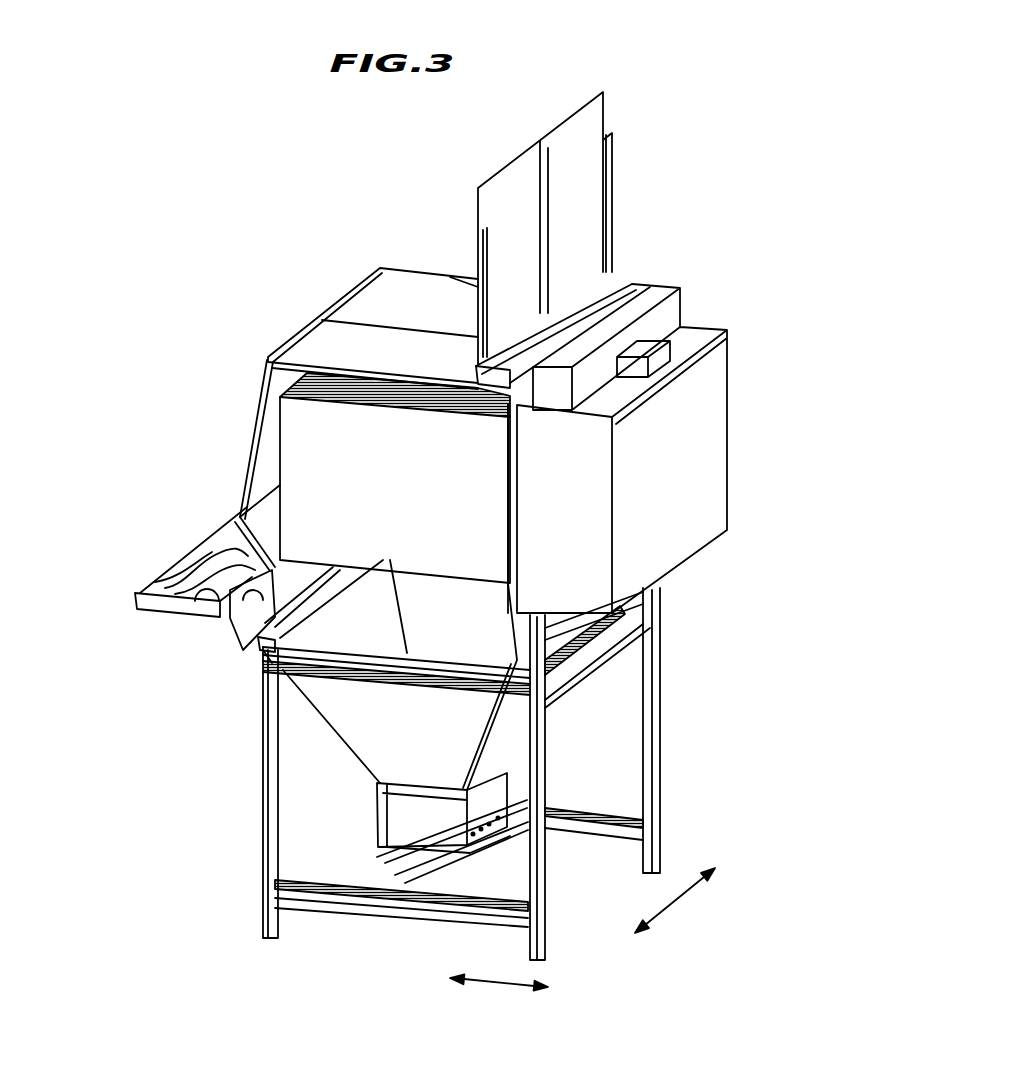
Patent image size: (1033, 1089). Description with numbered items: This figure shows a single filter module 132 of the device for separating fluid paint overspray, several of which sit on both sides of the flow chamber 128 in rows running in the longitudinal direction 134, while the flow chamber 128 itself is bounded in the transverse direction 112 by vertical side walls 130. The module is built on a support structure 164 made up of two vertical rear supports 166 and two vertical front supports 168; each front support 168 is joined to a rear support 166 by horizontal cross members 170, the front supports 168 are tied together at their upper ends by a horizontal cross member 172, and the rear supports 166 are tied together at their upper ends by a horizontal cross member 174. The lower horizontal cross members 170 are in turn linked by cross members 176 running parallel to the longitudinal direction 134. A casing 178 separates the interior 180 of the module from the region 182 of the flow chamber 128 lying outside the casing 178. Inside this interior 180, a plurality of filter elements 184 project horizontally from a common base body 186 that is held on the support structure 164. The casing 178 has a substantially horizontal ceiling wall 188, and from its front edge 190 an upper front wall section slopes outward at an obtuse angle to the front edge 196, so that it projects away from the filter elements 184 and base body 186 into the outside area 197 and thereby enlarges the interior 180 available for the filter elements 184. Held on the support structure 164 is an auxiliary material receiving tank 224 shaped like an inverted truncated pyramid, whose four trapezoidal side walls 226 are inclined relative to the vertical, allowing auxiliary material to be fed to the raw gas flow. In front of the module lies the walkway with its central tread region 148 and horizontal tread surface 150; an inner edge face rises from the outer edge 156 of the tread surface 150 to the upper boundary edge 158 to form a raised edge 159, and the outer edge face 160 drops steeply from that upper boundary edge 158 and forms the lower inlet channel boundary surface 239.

The transverse direction 112 is at (500, 985).
The flow chamber 128 is at (395, 403).
The vertical side walls 130 is at (592, 118).
The filter module 132 is at (700, 277).
The longitudinal direction 134 is at (677, 900).
The tread region 148 is at (147, 617).
The tread surface 150 is at (143, 588).
The outer edge 156 is at (203, 601).
The upper boundary edge 158 is at (243, 560).
The raised edge 159 is at (217, 573).
The outer edge face 160 is at (243, 644).
The support structure 164 is at (667, 675).
The rear supports 166 is at (650, 775).
The front supports 168 is at (267, 865).
The horizontal cross members 170 is at (460, 660).
The horizontal cross member 172 is at (287, 697).
The horizontal cross member 174 is at (615, 633).
The cross members 176 is at (507, 887).
The casing 178 is at (352, 278).
The interior 180 is at (272, 460).
The region of the flow chamber 182 is at (395, 403).
The filter elements 184 is at (420, 465).
The base body 186 is at (700, 328).
The ceiling wall 188 is at (427, 303).
The front edge of the ceiling wall 190 is at (356, 280).
The front edge of the front wall 196 is at (238, 527).
The outside area 197 is at (395, 403).
The auxiliary material receiving tank 224 is at (563, 695).
The trapezoidal side walls 226 is at (365, 610).
The lower inlet channel boundary surface 239 is at (263, 577).